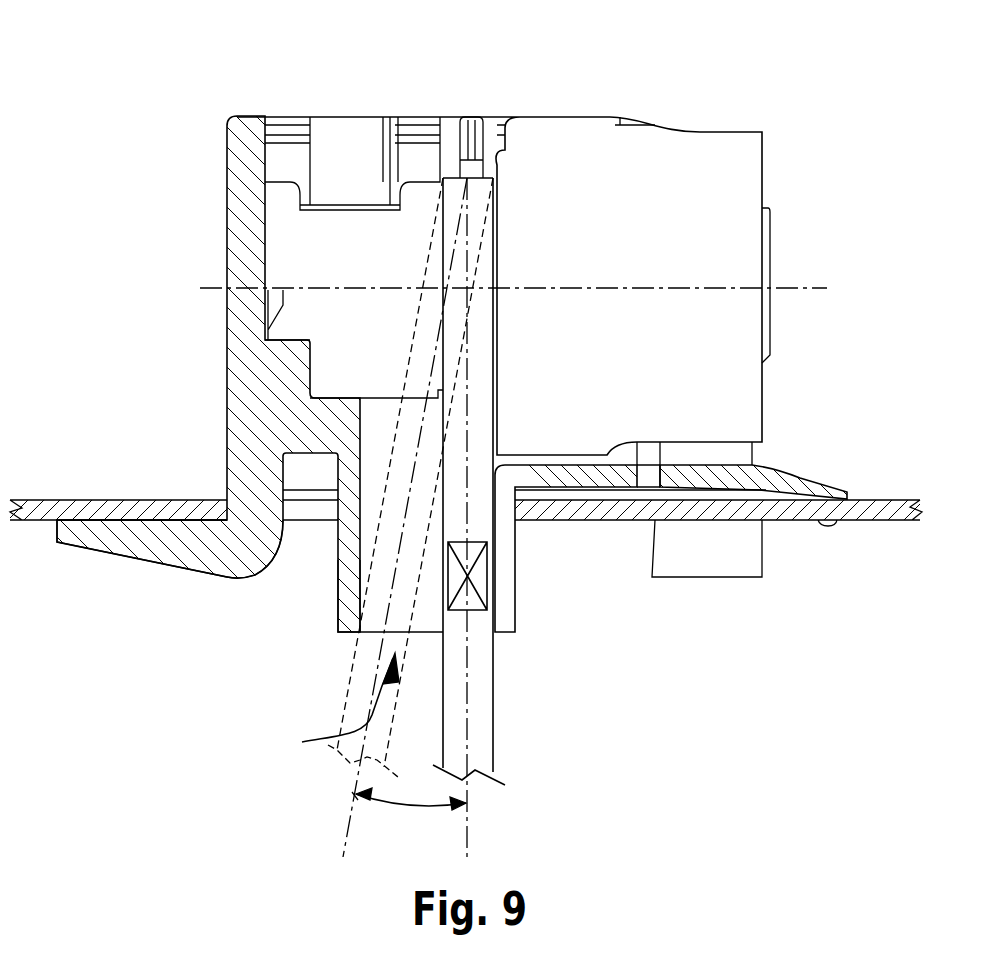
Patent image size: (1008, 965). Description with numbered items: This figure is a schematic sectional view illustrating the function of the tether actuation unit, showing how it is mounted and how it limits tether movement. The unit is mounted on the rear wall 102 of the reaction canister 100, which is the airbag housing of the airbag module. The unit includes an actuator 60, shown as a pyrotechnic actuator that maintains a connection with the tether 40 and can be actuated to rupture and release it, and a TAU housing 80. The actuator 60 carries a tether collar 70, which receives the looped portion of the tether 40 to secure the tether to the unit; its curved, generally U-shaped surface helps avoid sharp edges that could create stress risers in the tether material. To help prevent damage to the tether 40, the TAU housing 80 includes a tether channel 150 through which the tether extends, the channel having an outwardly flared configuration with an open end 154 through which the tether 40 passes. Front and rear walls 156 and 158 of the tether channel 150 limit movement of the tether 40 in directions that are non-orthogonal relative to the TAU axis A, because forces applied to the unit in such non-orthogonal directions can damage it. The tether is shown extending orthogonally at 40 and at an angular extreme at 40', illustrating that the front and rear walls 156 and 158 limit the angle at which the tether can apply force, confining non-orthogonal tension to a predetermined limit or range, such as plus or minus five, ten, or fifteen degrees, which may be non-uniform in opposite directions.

The tether 40 is at (493, 517).
The tether at angular extreme 40' is at (365, 517).
The actuator 60 is at (555, 237).
The tether collar 70 is at (473, 200).
The TAU housing 80 is at (243, 200).
The reaction canister 100 is at (873, 522).
The rear wall 102 is at (100, 508).
The tether channel 150 is at (355, 535).
The open end 154 is at (327, 709).
The front wall 156 is at (350, 603).
The rear wall 158 is at (507, 567).
The TAU axis A is at (827, 288).